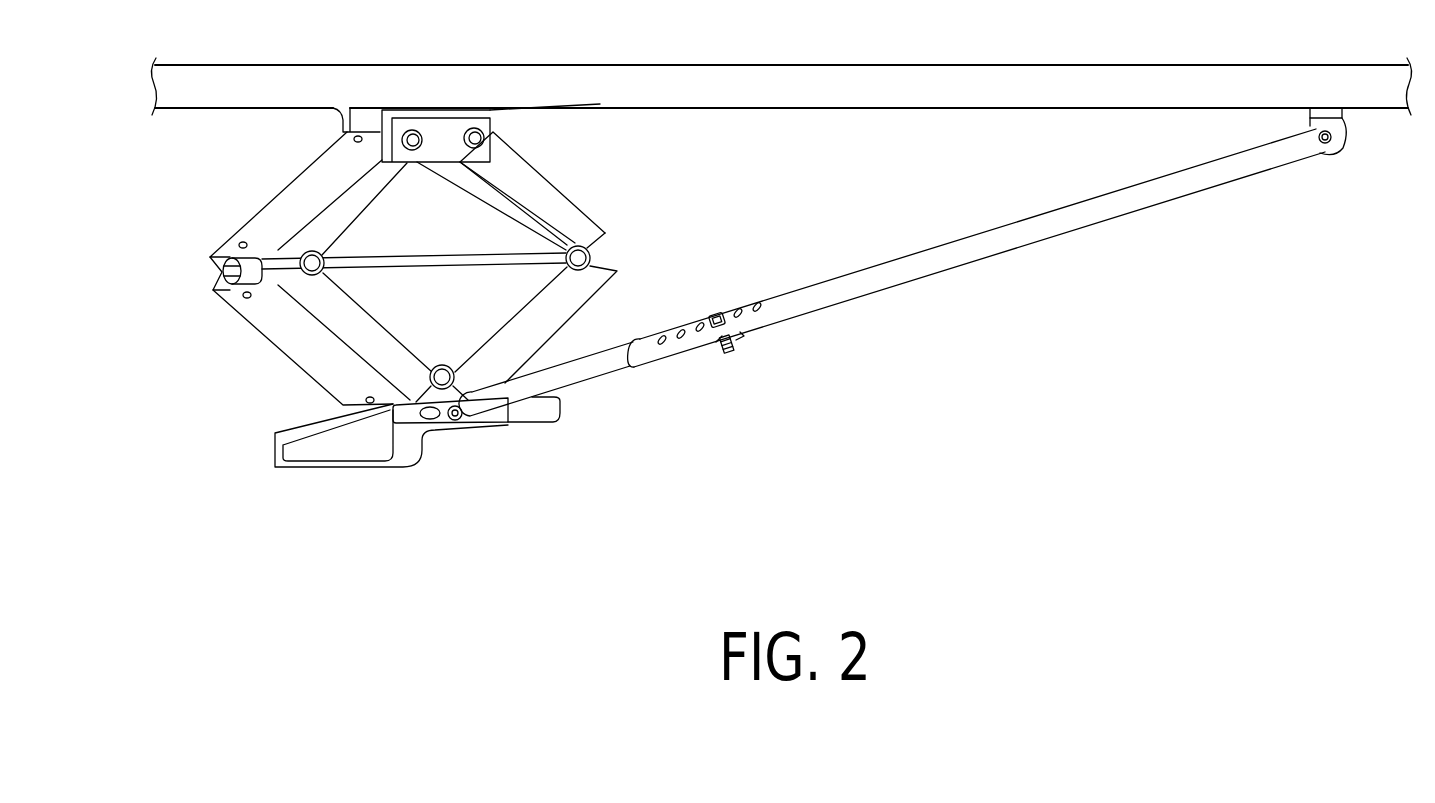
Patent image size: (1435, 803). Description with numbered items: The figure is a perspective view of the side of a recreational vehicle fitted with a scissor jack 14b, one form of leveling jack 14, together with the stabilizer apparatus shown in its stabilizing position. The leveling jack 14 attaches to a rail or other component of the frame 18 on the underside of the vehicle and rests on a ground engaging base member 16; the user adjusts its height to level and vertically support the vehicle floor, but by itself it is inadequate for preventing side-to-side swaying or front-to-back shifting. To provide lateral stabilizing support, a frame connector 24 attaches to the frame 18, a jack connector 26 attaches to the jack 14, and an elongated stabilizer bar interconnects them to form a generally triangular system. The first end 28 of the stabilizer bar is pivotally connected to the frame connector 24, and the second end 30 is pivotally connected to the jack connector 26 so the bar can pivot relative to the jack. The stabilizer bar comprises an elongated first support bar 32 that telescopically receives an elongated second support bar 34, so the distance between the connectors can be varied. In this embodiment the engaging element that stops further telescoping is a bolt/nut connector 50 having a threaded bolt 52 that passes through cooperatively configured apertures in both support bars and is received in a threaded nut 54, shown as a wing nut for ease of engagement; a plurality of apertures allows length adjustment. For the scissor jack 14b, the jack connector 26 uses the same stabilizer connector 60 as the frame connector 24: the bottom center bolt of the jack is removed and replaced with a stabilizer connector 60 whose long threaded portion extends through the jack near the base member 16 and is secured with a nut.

The leveling jack 14 is at (178, 243).
The scissor jack 14b is at (558, 195).
The base member 16 is at (303, 458).
The frame 18 is at (812, 70).
The frame connector 24 is at (1325, 180).
The jack connector 26 is at (440, 430).
The first end 28 is at (1295, 120).
The second end 30 is at (533, 412).
The first support bar 32 is at (1000, 253).
The second support bar 34 is at (598, 382).
The bolt/nut connector 50 is at (728, 297).
The threaded bolt 52 is at (730, 352).
The threaded nut 54 is at (745, 340).
The stabilizer connector 60 is at (1342, 152).